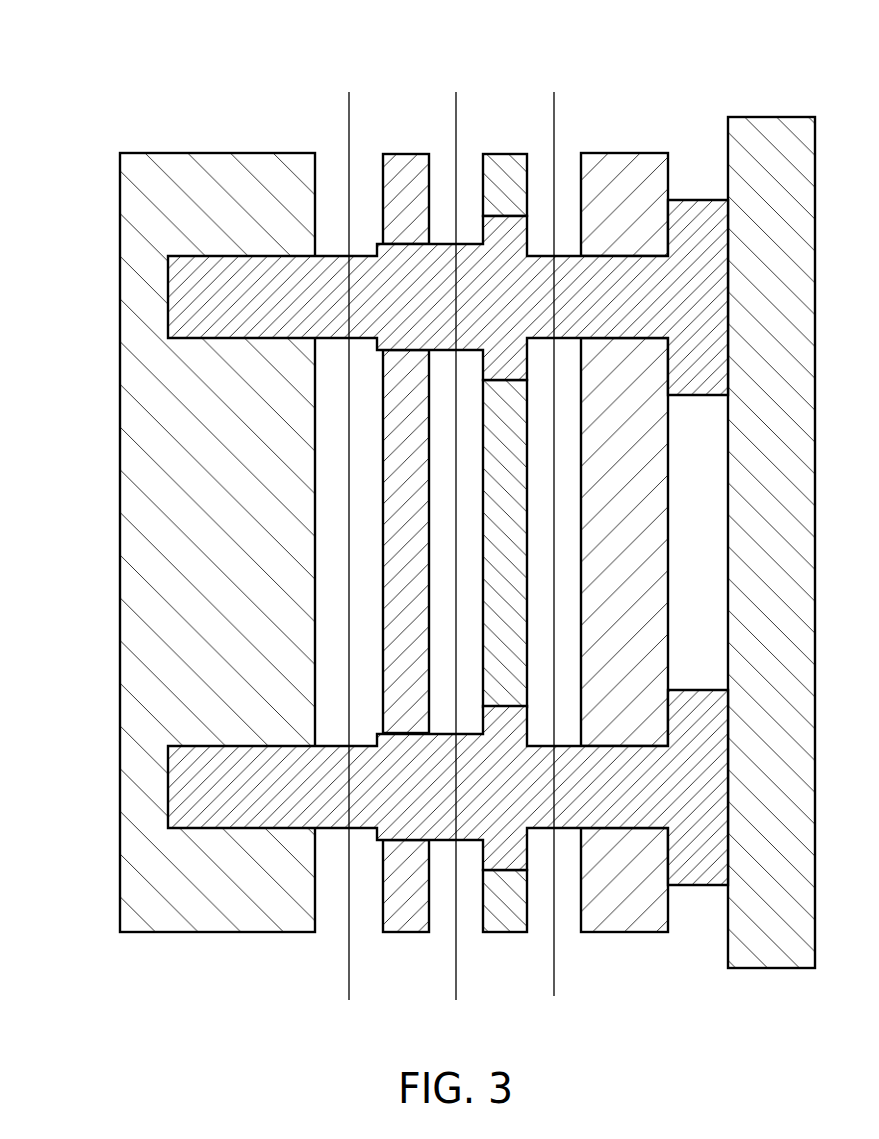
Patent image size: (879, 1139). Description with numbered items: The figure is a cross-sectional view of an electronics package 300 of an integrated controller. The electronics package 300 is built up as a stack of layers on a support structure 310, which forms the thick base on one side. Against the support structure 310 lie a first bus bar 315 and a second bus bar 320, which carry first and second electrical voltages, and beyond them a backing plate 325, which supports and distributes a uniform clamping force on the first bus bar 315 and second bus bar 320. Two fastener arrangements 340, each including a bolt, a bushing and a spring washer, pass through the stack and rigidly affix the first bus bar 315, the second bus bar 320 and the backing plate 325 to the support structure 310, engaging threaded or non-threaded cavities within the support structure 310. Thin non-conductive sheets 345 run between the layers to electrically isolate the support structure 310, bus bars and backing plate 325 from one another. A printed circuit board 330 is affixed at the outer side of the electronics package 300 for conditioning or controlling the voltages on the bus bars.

The electronics package 300 is at (110, 94).
The support structure 310 is at (215, 153).
The first bus bar 315 is at (408, 154).
The second bus bar 320 is at (507, 154).
The backing plate 325 is at (625, 153).
The printed circuit board 330 is at (770, 117).
The fastener arrangement 340 is at (331, 338).
The non-conductive sheets 345 is at (585, 1005).